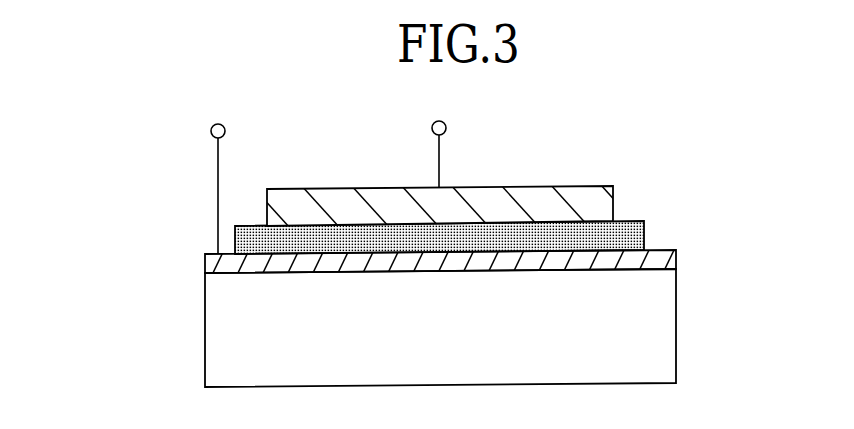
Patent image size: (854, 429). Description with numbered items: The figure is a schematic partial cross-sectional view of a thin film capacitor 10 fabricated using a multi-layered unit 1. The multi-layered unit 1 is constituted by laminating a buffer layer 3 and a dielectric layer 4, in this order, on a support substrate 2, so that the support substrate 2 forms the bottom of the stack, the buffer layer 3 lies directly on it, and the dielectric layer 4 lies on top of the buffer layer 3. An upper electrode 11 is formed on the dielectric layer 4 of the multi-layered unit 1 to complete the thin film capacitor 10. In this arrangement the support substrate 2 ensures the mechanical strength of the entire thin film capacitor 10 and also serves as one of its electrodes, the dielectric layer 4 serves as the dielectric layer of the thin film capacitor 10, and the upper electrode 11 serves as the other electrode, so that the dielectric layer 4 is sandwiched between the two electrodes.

The multi-layered unit 1 is at (771, 393).
The support substrate 2 is at (677, 313).
The buffer layer 3 is at (655, 262).
The dielectric layer 4 is at (647, 238).
The thin film capacitor 10 is at (142, 299).
The upper electrode 11 is at (338, 205).